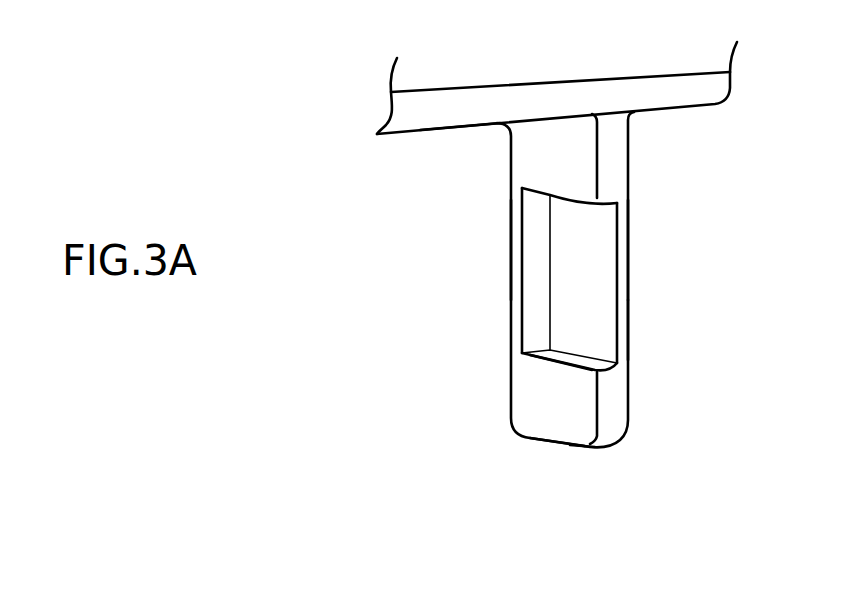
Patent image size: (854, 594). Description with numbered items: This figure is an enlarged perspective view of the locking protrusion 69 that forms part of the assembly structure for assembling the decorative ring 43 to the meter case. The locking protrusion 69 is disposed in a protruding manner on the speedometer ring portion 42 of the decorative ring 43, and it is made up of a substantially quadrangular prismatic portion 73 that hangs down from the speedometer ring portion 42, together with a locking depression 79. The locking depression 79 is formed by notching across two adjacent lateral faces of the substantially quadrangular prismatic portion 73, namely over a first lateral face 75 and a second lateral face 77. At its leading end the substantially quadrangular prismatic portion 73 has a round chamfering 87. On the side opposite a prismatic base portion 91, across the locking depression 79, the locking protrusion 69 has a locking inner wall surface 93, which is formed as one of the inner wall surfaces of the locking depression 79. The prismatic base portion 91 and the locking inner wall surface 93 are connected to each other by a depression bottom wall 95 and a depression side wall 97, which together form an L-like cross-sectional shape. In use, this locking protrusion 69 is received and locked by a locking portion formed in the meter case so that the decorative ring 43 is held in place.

The decorative ring 43 is at (493, 79).
The speedometer ring portion 42 is at (448, 129).
The locking protrusion 69 is at (499, 392).
The prismatic base portion 91 is at (577, 145).
The depression side wall 97 is at (517, 236).
The depression bottom wall 95 is at (622, 242).
The locking depression 79 is at (588, 272).
The substantially quadrangular prismatic portion 73 is at (623, 327).
The locking inner wall surface 93 is at (570, 356).
The second lateral face 77 is at (612, 402).
The first lateral face 75 is at (555, 403).
The round chamfering 87 is at (577, 445).